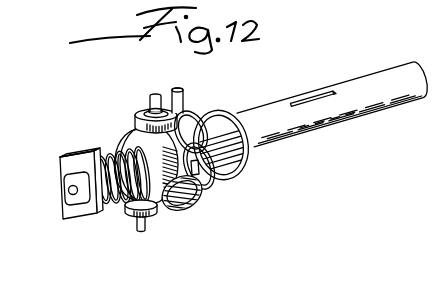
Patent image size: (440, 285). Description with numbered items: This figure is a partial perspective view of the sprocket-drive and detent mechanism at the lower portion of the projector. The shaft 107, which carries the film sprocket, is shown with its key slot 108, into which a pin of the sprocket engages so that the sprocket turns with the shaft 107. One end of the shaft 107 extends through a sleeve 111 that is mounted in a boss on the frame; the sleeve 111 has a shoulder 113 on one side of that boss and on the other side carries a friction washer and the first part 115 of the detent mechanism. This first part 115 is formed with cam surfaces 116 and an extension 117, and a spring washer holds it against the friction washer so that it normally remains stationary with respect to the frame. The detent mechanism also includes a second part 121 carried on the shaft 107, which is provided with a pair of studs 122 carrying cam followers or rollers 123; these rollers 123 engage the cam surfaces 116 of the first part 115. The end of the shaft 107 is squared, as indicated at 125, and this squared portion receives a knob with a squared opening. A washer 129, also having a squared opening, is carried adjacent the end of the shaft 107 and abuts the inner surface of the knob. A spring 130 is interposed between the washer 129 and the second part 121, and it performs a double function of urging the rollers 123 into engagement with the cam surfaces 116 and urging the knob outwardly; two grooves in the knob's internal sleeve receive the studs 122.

The shaft 107 is at (378, 78).
The key slot 108 is at (292, 106).
The sleeve 111 is at (208, 175).
The shoulder 113 is at (238, 172).
The first part of detent mechanism 115 is at (200, 192).
The cam surfaces 116 is at (197, 120).
The extension 117 is at (180, 89).
The second part of detent mechanism 121 is at (127, 141).
The studs 122 is at (157, 95).
The rollers 123 is at (143, 108).
The squared portion 125 is at (63, 182).
The washer 129 is at (62, 158).
The spring 130 is at (100, 147).